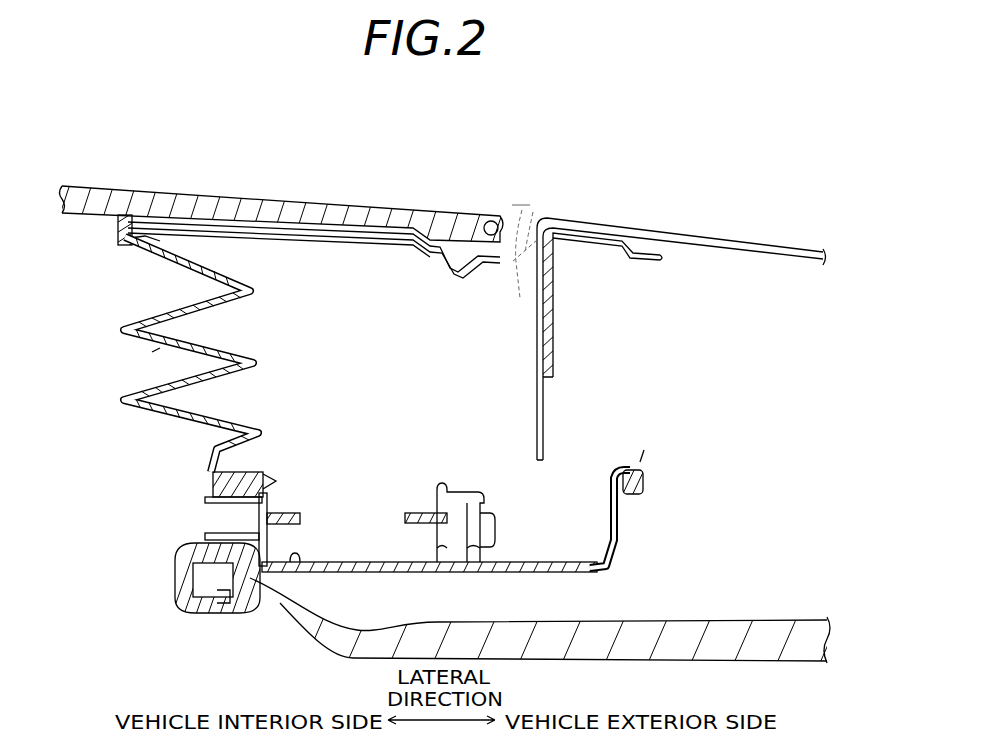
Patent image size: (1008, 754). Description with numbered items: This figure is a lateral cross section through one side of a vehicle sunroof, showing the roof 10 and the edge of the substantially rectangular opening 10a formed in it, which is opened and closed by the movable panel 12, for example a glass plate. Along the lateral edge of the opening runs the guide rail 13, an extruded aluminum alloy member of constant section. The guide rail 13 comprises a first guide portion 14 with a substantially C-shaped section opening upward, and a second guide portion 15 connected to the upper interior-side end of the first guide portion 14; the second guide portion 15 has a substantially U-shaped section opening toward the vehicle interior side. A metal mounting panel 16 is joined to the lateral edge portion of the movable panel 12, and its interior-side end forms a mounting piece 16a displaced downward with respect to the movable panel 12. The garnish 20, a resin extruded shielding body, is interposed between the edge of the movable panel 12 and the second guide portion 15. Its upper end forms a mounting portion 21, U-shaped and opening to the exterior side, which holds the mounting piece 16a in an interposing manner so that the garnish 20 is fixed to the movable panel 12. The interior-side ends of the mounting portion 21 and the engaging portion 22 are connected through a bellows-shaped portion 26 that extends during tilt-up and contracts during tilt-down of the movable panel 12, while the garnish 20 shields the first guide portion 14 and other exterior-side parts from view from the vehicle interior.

The roof 10 is at (700, 232).
The opening 10a is at (535, 218).
The movable panel 12 is at (250, 200).
The guide rail 13 is at (617, 520).
The first guide portion 14 is at (358, 560).
The second guide portion 15 is at (212, 505).
The mounting panel 16 is at (355, 243).
The mounting piece 16a is at (222, 241).
The garnish 20 is at (143, 425).
The mounting portion 21 is at (118, 222).
The engaging portion 22 is at (210, 487).
The bellows-shaped portion 26 is at (152, 352).